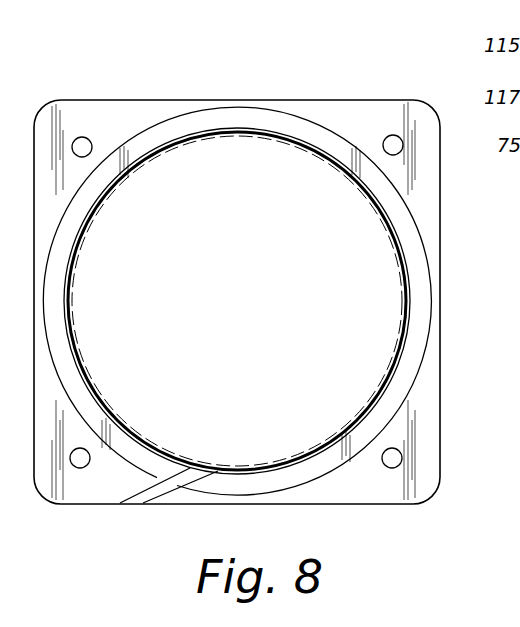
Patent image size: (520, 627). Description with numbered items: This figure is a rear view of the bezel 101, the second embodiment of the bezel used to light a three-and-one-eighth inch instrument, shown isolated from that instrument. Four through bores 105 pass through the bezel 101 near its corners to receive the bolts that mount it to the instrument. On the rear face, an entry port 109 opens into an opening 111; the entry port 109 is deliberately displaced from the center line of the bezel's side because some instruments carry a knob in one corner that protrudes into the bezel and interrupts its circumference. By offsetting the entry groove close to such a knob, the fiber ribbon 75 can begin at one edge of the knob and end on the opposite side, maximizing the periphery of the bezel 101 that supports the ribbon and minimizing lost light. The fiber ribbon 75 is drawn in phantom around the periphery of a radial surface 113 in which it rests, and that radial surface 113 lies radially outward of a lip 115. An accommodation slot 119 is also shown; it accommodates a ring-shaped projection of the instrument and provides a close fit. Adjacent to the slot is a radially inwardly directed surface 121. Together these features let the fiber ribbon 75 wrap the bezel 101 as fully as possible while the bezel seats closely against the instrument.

The bezel 101 is at (318, 92).
The through bores 105 is at (83, 137).
The entry port 109 is at (137, 504).
The opening 111 is at (207, 470).
The radial surface 113 is at (384, 382).
The lip 115 is at (70, 292).
The accommodation slot 119 is at (413, 262).
The radially inwardly directed surface 121 is at (172, 125).
The fiber ribbon 75 is at (121, 410).